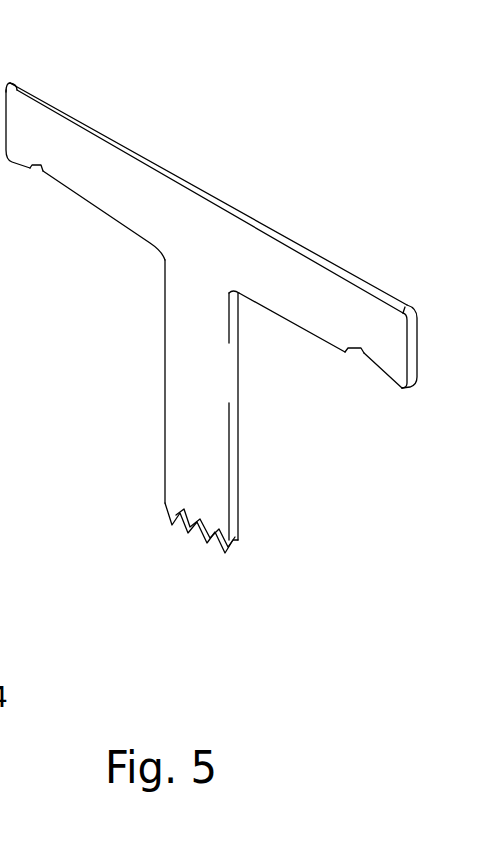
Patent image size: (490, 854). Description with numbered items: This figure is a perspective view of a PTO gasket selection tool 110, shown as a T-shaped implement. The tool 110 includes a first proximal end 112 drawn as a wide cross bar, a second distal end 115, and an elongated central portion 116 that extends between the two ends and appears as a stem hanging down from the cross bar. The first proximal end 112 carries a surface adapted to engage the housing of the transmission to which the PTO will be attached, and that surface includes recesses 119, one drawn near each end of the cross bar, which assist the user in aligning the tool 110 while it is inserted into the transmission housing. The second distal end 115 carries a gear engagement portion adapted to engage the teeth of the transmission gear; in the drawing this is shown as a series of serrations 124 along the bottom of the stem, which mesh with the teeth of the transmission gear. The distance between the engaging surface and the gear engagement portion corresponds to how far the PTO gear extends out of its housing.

The PTO gasket selection tool 110 is at (234, 328).
The first proximal end 112 is at (118, 158).
The second distal end 115 is at (211, 427).
The elongated central portion 116 is at (220, 387).
The recesses 119 is at (42, 172).
The serrated teeth 124 is at (192, 547).